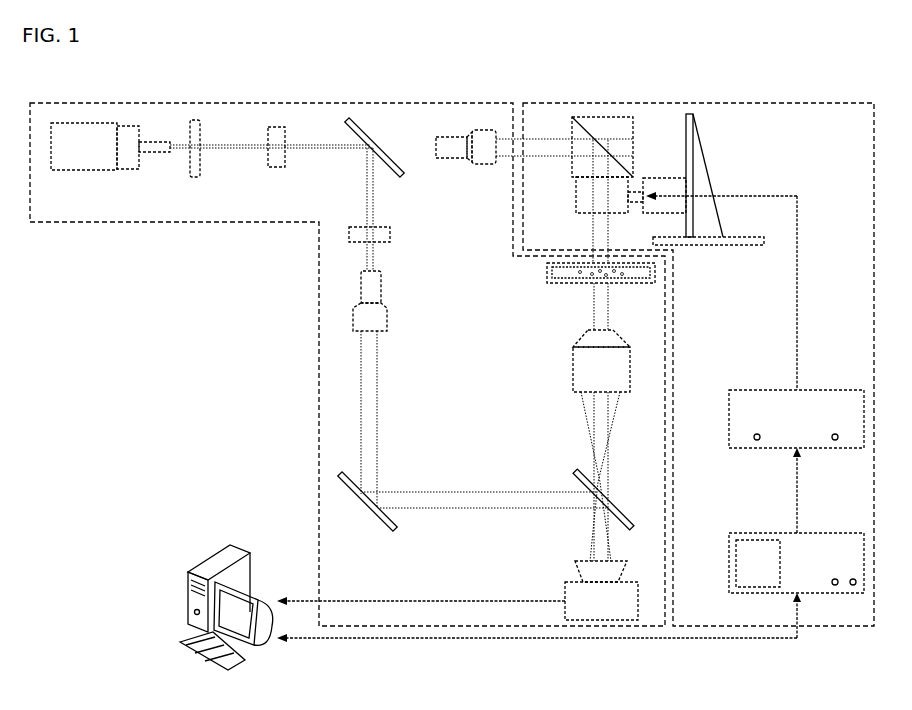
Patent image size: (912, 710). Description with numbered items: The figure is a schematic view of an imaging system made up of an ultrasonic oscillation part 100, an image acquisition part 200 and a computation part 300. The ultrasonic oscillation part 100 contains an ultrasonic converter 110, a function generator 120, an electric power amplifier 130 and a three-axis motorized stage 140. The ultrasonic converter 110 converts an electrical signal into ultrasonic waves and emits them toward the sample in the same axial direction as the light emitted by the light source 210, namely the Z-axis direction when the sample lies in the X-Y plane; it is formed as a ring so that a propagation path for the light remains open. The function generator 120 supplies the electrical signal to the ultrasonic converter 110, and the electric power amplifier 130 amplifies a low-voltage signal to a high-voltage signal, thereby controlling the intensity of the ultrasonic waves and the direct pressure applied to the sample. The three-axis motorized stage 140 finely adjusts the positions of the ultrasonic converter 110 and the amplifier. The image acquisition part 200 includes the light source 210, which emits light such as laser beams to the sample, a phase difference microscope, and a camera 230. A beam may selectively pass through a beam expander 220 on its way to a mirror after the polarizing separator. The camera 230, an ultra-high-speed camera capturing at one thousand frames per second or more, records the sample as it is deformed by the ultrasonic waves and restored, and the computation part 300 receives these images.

The ultrasonic oscillation part 100 is at (753, 99).
The ultrasonic converter 110 is at (583, 199).
The function generator 120 is at (811, 533).
The electric power amplifier 130 is at (811, 390).
The three-axis motorized stage 140 is at (704, 165).
The image acquisition part 200 is at (221, 99).
The light source 210 is at (92, 170).
The beam expander 220 is at (388, 312).
The camera 230 is at (565, 582).
The computation part 300 is at (210, 568).